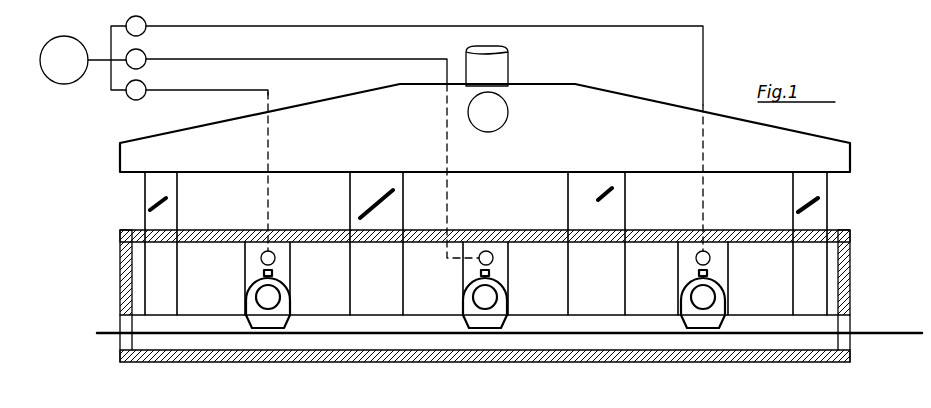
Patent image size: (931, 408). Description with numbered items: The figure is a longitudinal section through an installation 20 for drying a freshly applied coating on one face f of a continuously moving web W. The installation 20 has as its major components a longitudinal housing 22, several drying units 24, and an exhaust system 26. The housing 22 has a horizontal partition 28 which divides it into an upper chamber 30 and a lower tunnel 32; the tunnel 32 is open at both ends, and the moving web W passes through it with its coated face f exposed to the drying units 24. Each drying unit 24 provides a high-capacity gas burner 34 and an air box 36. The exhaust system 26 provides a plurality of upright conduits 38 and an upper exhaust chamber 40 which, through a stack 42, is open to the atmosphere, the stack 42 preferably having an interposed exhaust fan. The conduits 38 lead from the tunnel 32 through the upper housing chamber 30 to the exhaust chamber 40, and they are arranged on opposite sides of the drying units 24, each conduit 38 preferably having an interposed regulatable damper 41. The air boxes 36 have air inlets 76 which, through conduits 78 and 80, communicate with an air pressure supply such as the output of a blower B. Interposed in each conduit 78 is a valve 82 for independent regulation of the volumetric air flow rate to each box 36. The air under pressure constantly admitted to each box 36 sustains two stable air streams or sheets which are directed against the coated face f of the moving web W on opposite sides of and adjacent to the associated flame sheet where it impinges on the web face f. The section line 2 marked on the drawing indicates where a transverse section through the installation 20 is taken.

The installation 20 is at (72, 192).
The longitudinal housing 22 is at (855, 227).
The drying unit 24 is at (237, 288).
The exhaust system 26 is at (640, 91).
The horizontal partition 28 is at (640, 315).
The upper chamber 30 is at (680, 215).
The lower tunnel 32 is at (620, 345).
The gas burner 34 is at (260, 301).
The air box 36 is at (304, 282).
The upright conduits 38 is at (188, 227).
The upper exhaust chamber 40 is at (572, 140).
The regulatable damper 41 is at (152, 206).
The stack 42 is at (520, 66).
The air inlet 76 is at (262, 255).
The conduit 78 is at (305, 75).
The conduit 80 is at (100, 50).
The valve 82 is at (148, 84).
The blower B is at (68, 72).
The web W is at (397, 338).
The coated face f is at (522, 334).
The section line 2- 2 is at (485, 218).